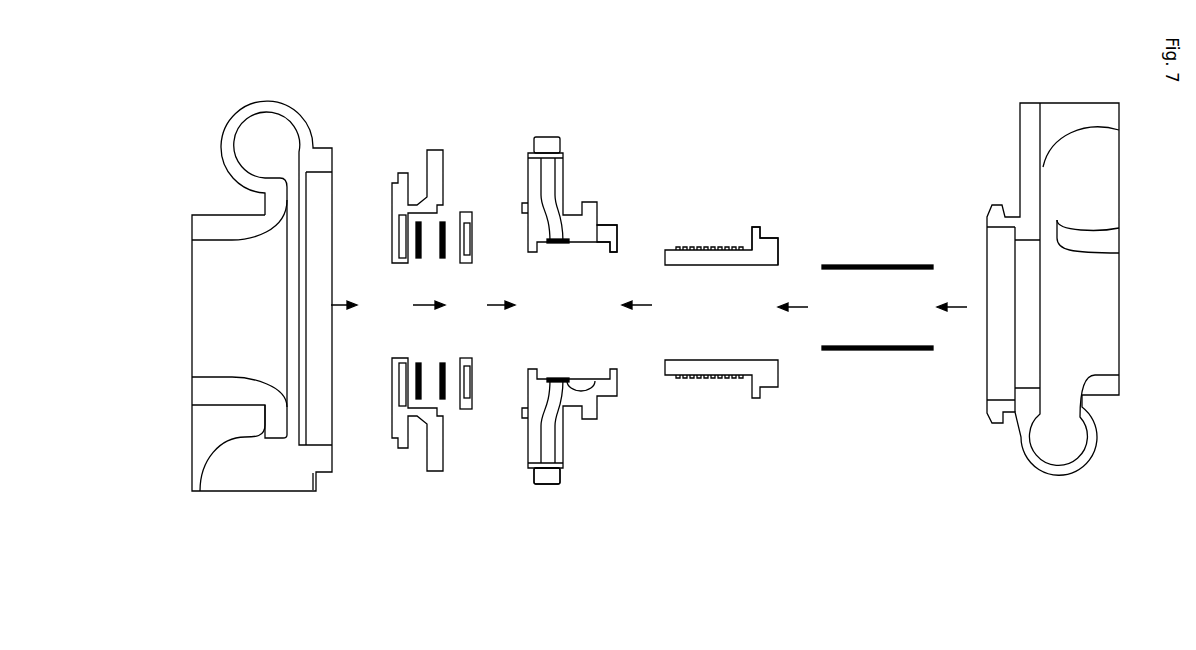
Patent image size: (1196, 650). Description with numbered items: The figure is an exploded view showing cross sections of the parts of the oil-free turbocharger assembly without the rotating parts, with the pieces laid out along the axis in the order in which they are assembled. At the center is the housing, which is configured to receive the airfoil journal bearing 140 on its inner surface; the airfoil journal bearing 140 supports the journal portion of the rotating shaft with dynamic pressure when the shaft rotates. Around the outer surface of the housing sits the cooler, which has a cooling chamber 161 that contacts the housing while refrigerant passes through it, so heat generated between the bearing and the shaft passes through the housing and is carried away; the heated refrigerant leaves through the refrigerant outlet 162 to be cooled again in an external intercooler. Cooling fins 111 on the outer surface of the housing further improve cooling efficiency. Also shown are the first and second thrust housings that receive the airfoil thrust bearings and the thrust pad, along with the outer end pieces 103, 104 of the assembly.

The second housing part 103 is at (1050, 103).
The first housing part 104 is at (205, 215).
The cooling fins 111 is at (743, 250).
The airfoil journal bearing 140 is at (889, 265).
The cooling chamber 161 is at (612, 248).
The refrigerant outlet 162 is at (540, 488).